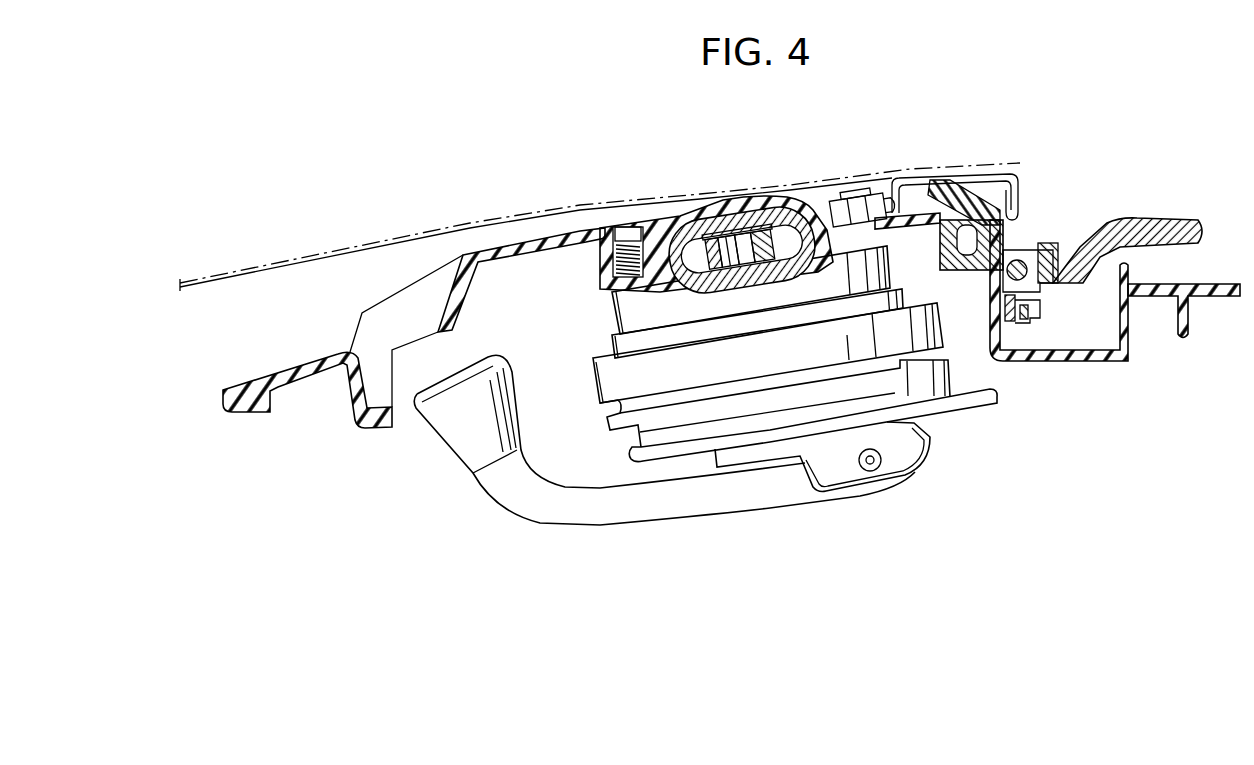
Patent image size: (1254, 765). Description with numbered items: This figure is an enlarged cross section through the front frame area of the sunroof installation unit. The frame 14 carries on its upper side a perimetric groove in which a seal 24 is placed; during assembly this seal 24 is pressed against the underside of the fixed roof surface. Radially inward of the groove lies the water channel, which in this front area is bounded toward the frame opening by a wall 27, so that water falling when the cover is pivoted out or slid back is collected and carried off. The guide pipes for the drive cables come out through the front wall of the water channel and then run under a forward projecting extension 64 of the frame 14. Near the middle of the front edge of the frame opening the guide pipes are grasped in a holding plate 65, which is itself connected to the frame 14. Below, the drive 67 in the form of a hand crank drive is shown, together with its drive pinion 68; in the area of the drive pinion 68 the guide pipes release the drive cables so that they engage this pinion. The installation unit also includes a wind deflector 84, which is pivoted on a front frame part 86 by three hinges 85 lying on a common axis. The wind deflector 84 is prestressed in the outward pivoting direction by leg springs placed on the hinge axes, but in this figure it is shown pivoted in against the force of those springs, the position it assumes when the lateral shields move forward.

The frame 14 is at (528, 243).
The seal 24 is at (978, 188).
The wall 27 is at (1128, 313).
The forward projecting extension 64 is at (298, 368).
The holding plate 65 is at (720, 238).
The drive 67 is at (864, 508).
The drive pinion 68 is at (758, 238).
The wind deflector 84 is at (1167, 227).
The hinges 85 is at (1020, 257).
The front frame part 86 is at (1022, 368).